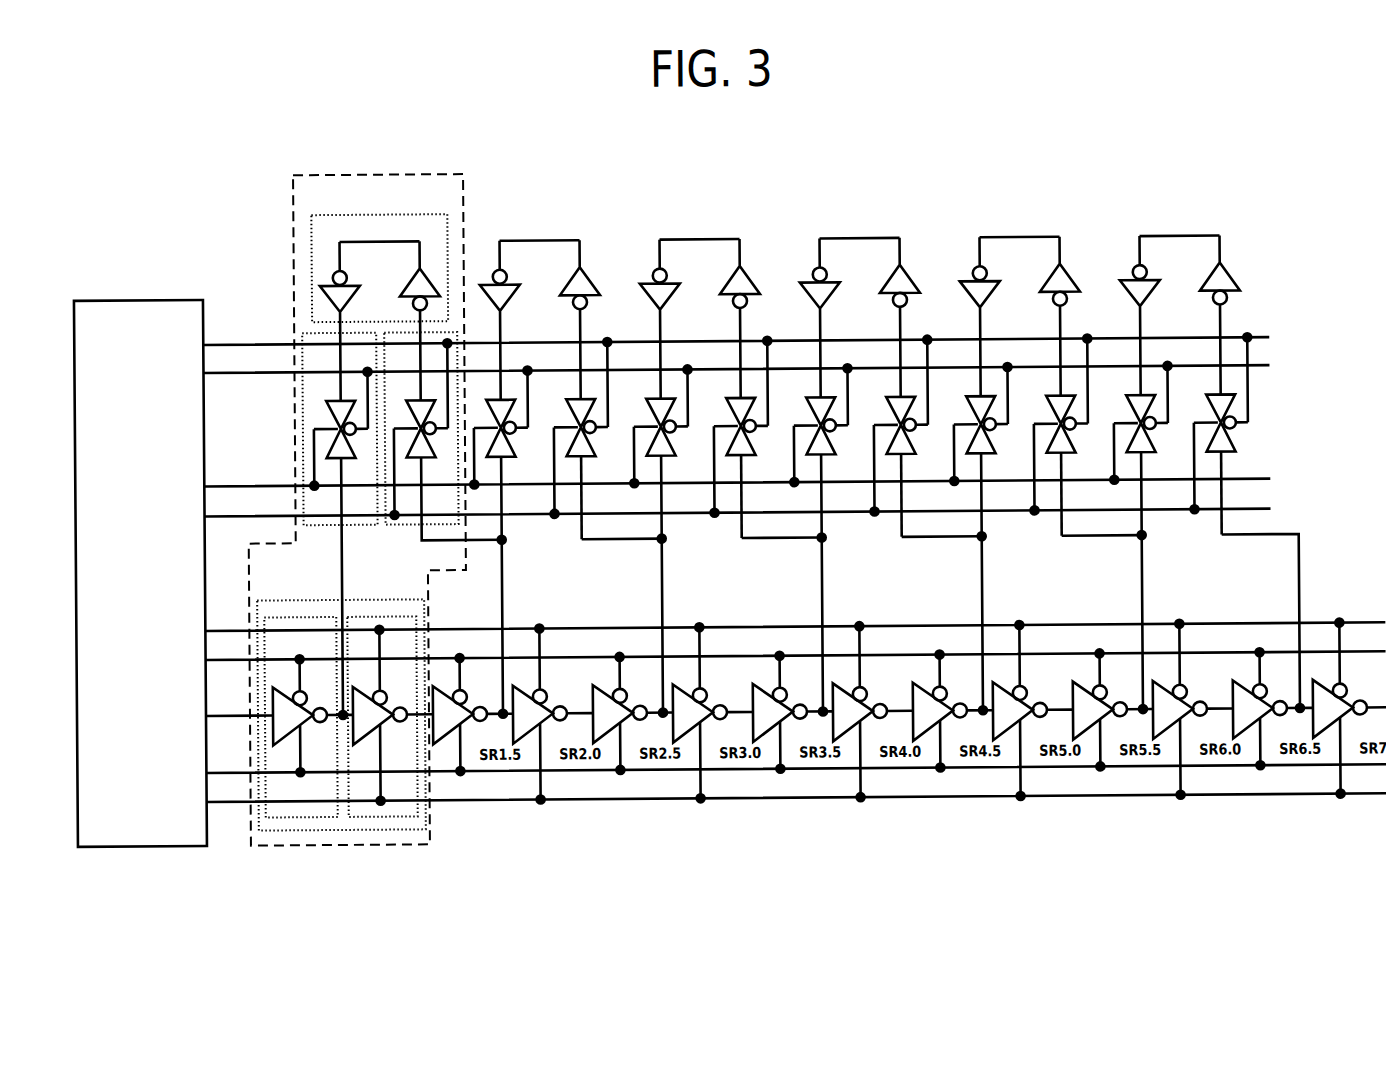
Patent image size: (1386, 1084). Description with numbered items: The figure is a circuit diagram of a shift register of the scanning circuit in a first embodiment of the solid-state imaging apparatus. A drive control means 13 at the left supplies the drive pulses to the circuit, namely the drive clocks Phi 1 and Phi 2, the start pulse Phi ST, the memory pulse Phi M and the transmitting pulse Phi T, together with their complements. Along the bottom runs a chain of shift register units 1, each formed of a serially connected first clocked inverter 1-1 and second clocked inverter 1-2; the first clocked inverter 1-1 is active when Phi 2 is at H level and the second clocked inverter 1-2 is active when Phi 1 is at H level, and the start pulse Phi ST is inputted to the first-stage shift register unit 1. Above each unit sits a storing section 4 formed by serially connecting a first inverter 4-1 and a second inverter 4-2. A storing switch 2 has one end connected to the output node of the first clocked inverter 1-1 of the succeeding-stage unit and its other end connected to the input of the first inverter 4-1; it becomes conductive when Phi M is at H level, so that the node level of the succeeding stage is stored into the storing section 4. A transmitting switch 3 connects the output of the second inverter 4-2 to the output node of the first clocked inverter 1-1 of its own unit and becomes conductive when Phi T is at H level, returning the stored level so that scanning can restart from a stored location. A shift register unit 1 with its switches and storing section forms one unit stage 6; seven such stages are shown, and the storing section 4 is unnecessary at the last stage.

The drive control means 13 is at (130, 299).
The unit stage of the shift register 6 is at (318, 177).
The storing section 4 is at (331, 290).
The first inverter 4-1 is at (406, 289).
The second inverter 4-2 is at (325, 285).
The transmitting switch 3 is at (306, 334).
The storing switch 2 is at (445, 334).
The shift register unit 1 is at (349, 683).
The first clocked inverter 1-1 is at (282, 618).
The second clocked inverter 1-2 is at (386, 618).